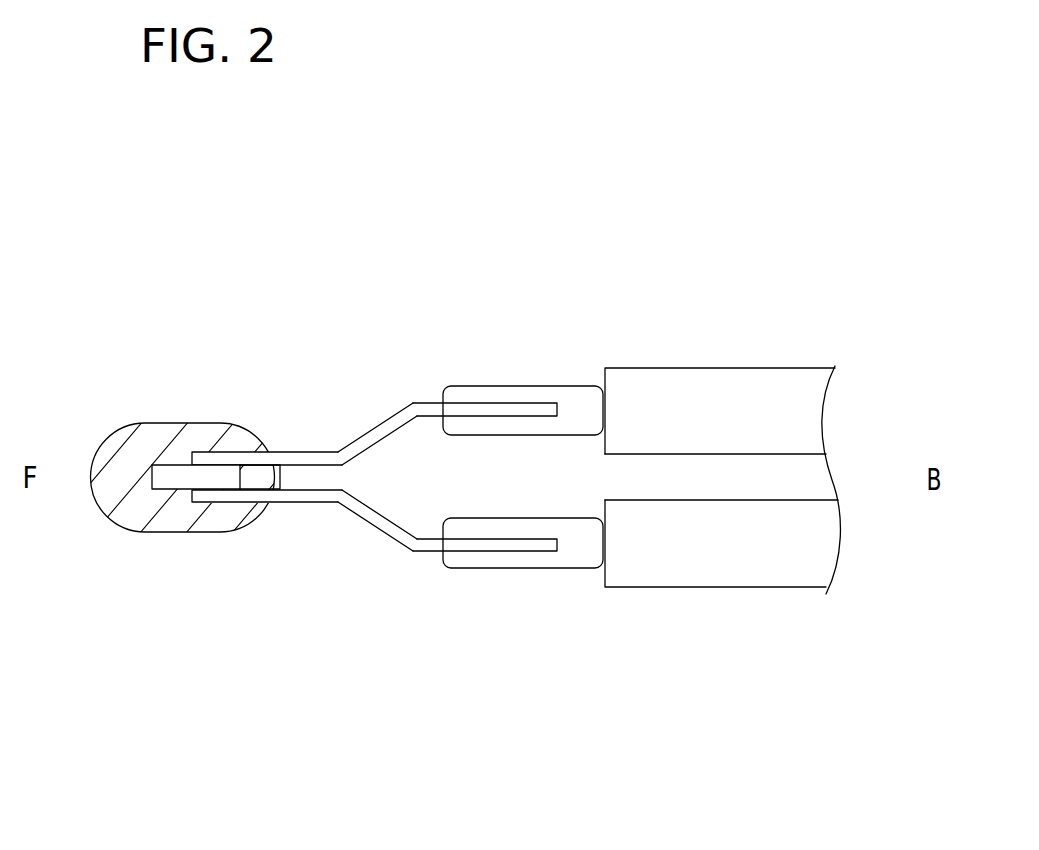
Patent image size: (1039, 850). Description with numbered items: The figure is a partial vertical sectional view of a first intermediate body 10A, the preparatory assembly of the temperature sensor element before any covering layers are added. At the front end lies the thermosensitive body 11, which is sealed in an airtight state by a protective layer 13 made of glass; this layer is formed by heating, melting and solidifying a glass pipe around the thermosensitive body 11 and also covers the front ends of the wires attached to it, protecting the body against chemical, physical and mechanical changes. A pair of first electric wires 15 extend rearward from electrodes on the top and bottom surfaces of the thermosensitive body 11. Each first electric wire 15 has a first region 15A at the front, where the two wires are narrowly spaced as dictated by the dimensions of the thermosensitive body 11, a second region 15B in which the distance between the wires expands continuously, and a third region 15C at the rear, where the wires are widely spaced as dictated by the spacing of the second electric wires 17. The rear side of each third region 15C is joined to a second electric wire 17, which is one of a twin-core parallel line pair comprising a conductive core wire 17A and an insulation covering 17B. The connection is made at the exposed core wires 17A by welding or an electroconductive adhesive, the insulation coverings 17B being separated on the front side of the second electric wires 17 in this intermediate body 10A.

The first intermediate body 10A is at (787, 352).
The thermosensitive body 11 is at (163, 490).
The protective layer 13 is at (192, 423).
The first electric wire 15 is at (374, 480).
The first region 15A is at (306, 450).
The second region 15B is at (362, 437).
The third region 15C is at (485, 483).
The second electric wire 17 is at (641, 476).
The core wire 17A is at (565, 386).
The insulation covering 17B is at (722, 479).